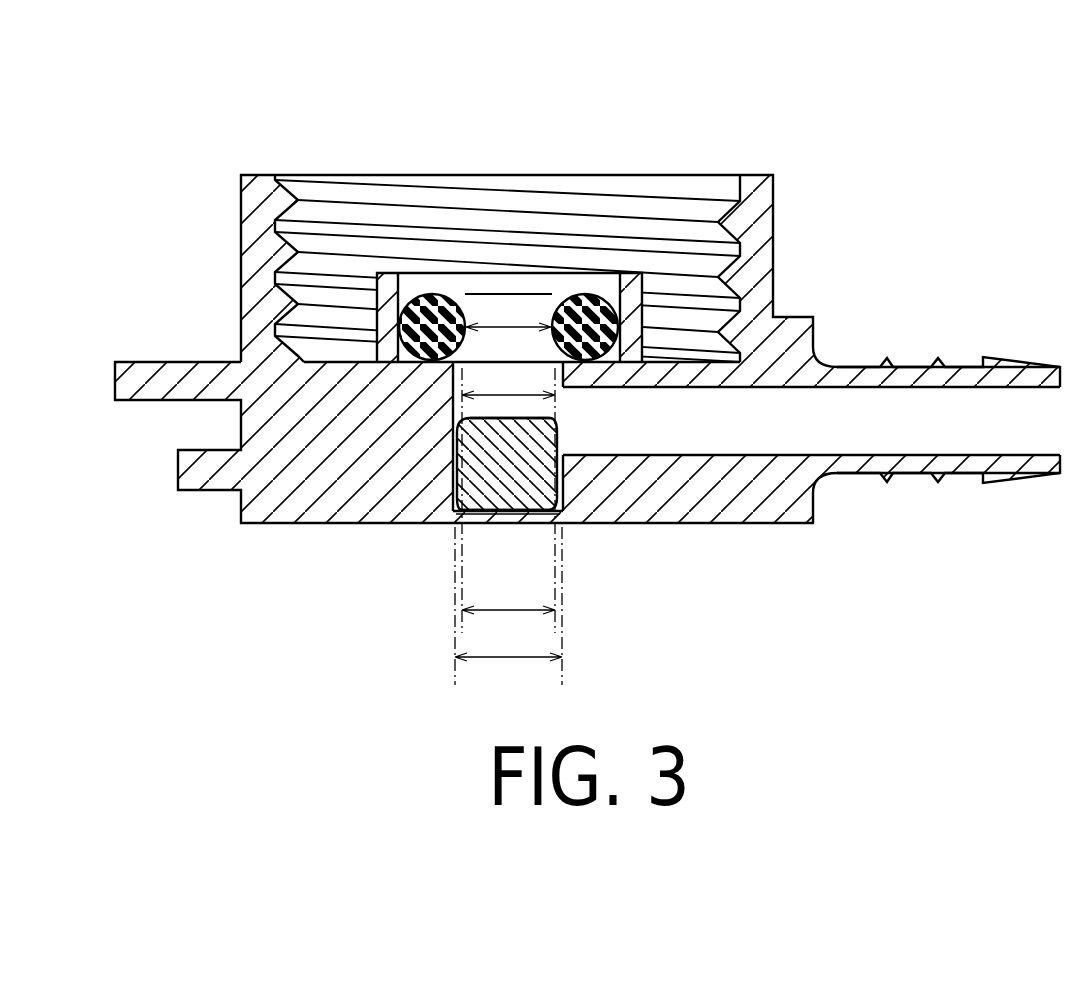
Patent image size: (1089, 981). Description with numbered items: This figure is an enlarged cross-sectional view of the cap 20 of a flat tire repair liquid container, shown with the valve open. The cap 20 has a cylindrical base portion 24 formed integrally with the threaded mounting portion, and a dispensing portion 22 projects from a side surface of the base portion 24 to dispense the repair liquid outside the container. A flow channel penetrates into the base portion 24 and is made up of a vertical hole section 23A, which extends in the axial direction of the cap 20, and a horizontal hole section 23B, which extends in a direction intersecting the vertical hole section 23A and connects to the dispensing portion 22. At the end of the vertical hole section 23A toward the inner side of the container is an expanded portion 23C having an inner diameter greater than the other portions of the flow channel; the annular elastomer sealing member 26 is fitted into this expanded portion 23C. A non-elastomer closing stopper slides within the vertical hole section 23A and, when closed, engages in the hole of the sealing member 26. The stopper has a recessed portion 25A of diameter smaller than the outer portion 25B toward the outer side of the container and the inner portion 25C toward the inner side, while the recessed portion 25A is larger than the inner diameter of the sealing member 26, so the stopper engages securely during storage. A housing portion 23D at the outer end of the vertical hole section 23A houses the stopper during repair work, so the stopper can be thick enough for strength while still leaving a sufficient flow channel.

The cap 20 is at (812, 163).
The dispensing portion 22 is at (947, 462).
The vertical hole section 23A is at (455, 418).
The horizontal hole section 23B is at (700, 427).
The expanded portion 23C is at (618, 275).
The housing portion 23D is at (562, 510).
The base portion 24 is at (778, 502).
The recessed portion 25A is at (460, 453).
The outer portion 25B is at (503, 500).
The inner portion 25C is at (540, 424).
The sealing member 26 is at (428, 322).